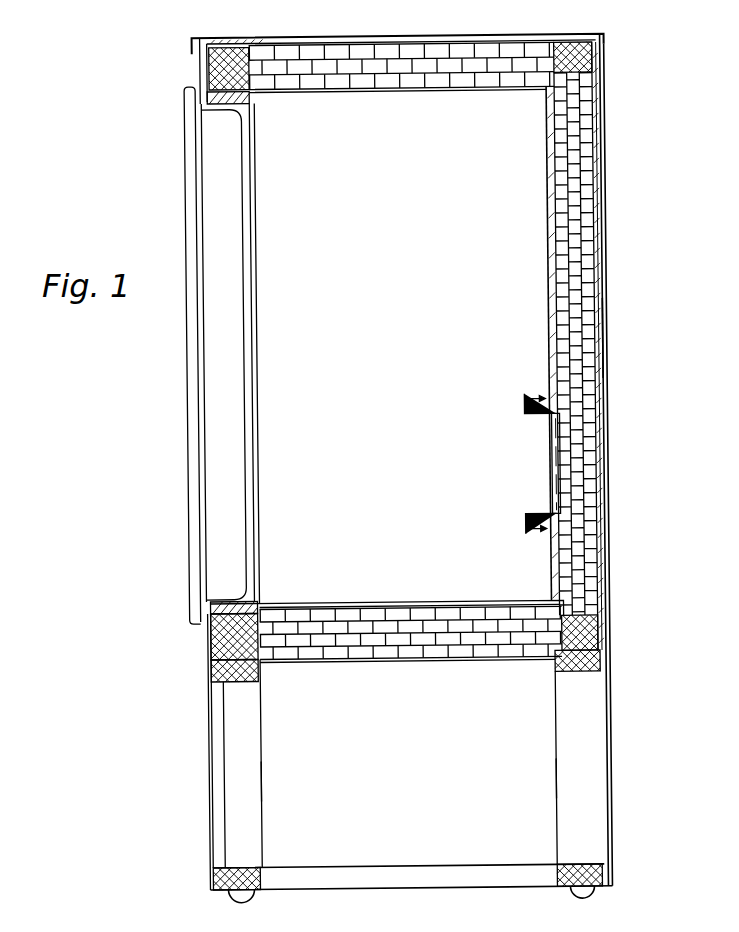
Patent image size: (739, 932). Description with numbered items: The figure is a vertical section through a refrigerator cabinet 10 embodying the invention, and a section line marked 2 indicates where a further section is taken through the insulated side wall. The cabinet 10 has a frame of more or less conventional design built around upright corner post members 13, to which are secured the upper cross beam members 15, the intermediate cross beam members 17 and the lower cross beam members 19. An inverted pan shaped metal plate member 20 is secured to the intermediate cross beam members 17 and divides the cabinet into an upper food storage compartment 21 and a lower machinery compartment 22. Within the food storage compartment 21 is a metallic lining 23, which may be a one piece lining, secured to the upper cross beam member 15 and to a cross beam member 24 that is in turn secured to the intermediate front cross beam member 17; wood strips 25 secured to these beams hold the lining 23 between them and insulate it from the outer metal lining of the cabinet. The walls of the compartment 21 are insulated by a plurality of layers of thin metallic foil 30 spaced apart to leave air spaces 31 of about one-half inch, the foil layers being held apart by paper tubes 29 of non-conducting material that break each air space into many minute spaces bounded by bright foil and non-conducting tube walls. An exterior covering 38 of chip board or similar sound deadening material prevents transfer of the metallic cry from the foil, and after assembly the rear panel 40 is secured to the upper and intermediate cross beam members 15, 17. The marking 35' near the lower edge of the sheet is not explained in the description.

The refrigerator cabinet 10 is at (660, 253).
The upright corner post members 13 is at (232, 757).
The upper cross beam members 15 is at (212, 62).
The intermediate cross beam members 17 is at (220, 679).
The lower cross beam members 19 is at (216, 884).
The inverted pan shaped metal plate member 20 is at (351, 658).
The food storage compartment 21 is at (374, 353).
The machinery compartment 22 is at (426, 763).
The metallic lining 23 is at (362, 92).
The cross beam member 24 is at (224, 641).
The wood strips 25 is at (206, 100).
The tubes of non-conducting material 29 is at (592, 459).
The layers of thin metallic foil 30 is at (586, 143).
The air spaces 31 is at (592, 163).
The exterior covering 38 is at (470, 29).
The rear panel 40 is at (604, 343).
The section line 2- 2 is at (528, 467).
The bottom member 35' is at (434, 925).